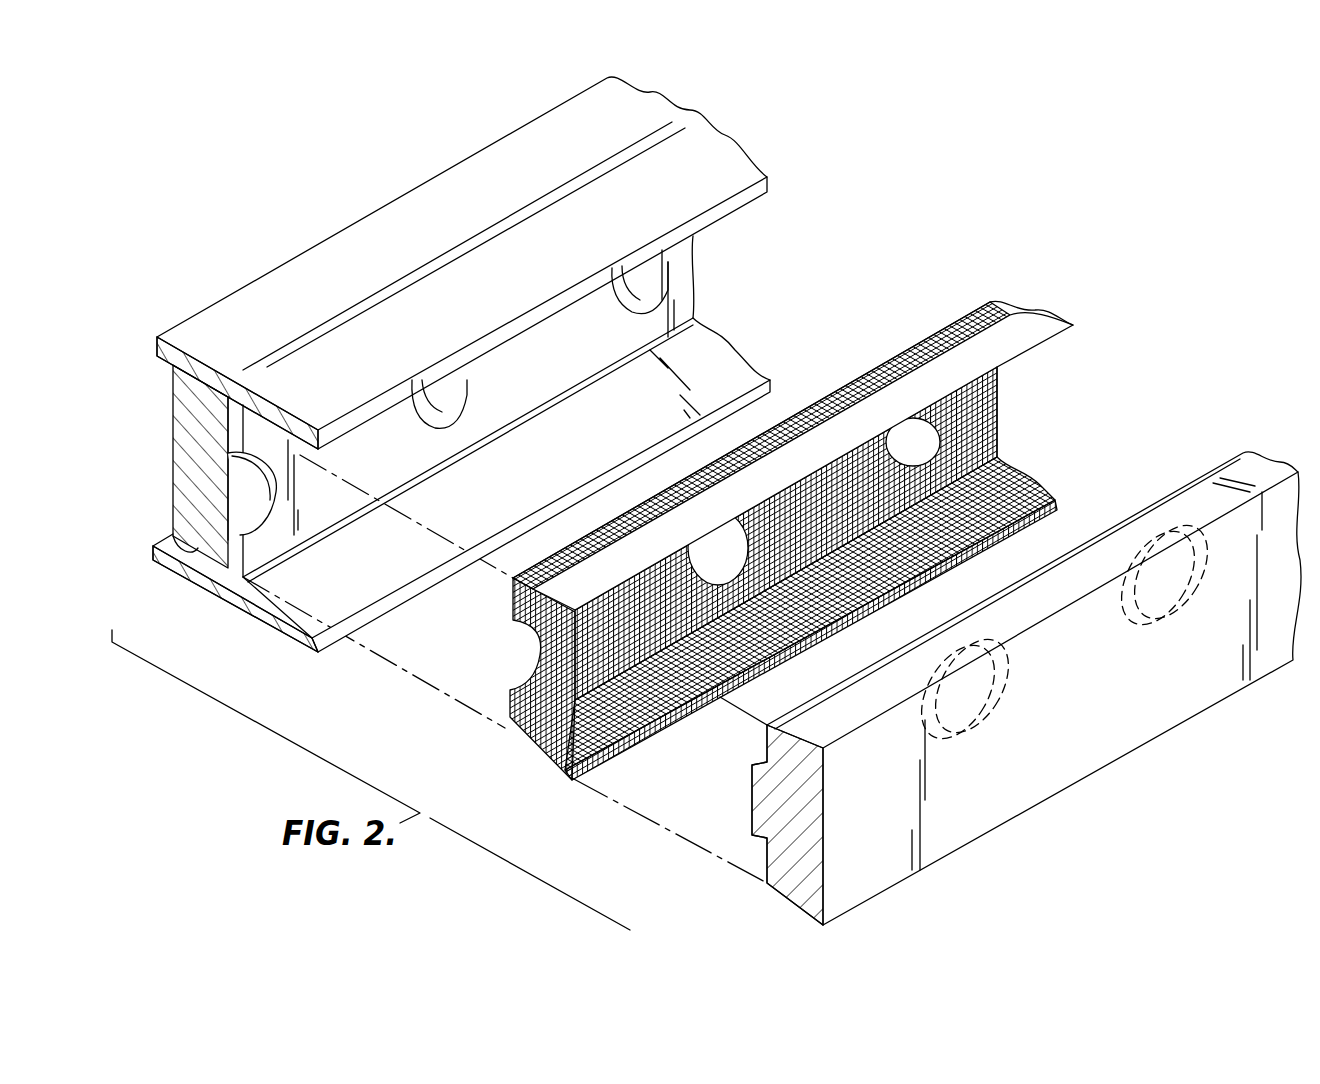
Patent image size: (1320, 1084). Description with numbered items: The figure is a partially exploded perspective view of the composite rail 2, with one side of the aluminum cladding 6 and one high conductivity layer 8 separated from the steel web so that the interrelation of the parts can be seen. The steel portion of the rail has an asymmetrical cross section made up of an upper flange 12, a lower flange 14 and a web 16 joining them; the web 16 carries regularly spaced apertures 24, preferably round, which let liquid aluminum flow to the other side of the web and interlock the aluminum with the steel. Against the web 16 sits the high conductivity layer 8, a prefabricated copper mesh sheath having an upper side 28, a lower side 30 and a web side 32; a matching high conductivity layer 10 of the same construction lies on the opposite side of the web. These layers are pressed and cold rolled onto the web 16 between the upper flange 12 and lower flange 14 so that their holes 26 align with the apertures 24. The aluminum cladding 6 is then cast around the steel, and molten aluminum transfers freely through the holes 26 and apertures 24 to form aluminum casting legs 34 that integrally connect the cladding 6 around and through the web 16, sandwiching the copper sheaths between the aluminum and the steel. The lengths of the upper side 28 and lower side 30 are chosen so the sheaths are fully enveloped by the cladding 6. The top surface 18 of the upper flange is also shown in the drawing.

The composite rail 2 is at (168, 200).
The aluminum cladding 6 is at (187, 424).
The high conductivity layer 8 is at (1010, 332).
The high conductivity layer 10 is at (180, 537).
The upper flange 12 is at (156, 348).
The lower flange 14 is at (230, 588).
The web 16 is at (677, 308).
The top surface 18 is at (685, 152).
The apertures 24 is at (648, 280).
The holes 26 is at (917, 425).
The upper side 28 is at (962, 350).
The lower side 30 is at (1019, 496).
The web side 32 is at (998, 438).
The aluminum casting legs 34 is at (1147, 530).